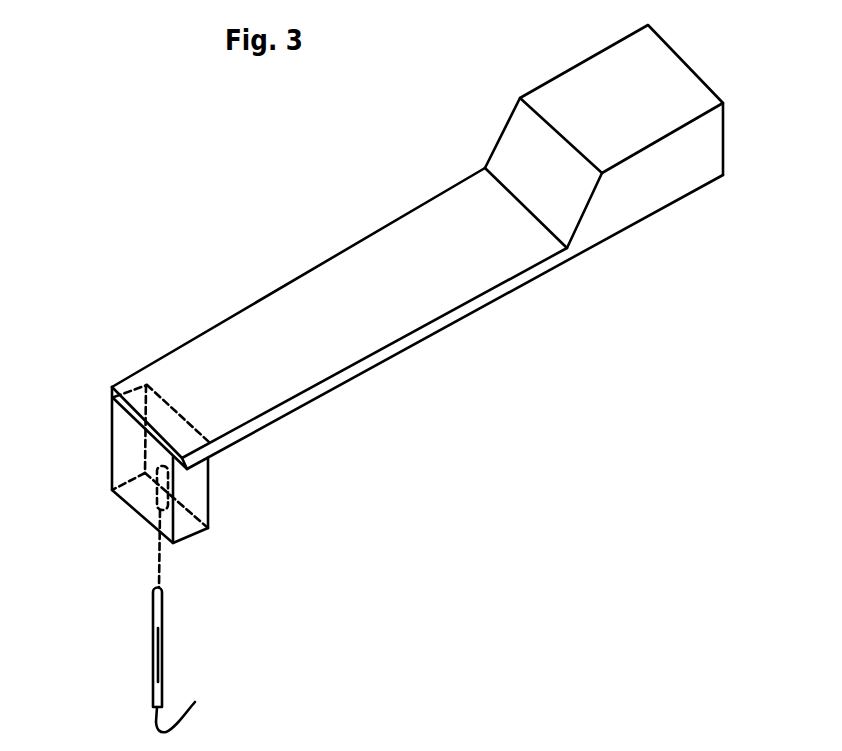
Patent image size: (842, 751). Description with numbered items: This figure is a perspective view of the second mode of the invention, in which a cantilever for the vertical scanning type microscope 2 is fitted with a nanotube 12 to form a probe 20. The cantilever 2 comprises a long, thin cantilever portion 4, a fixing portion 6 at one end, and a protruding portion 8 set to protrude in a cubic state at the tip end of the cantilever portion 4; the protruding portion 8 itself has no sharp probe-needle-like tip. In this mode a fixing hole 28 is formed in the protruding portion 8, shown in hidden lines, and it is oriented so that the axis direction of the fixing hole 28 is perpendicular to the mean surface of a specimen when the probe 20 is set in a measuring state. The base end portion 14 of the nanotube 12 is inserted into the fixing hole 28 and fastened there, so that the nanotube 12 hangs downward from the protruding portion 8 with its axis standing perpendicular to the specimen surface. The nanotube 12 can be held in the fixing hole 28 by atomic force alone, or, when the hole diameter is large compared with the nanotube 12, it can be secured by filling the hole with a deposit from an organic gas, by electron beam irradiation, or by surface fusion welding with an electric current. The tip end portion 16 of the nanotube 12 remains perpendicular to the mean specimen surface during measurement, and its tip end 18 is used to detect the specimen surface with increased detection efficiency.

The cantilever for the vertical scanning type microscope 2 is at (285, 268).
The cantilever portion 4 is at (473, 273).
The fixing portion 6 is at (672, 173).
The protruding portion 8 is at (125, 464).
The nanotube 12 is at (132, 648).
The base end portion 14 is at (155, 611).
The tip end portion 16 is at (160, 680).
The tip end 18 is at (192, 703).
The probe 20 is at (367, 187).
The fixing hole 28 is at (140, 471).